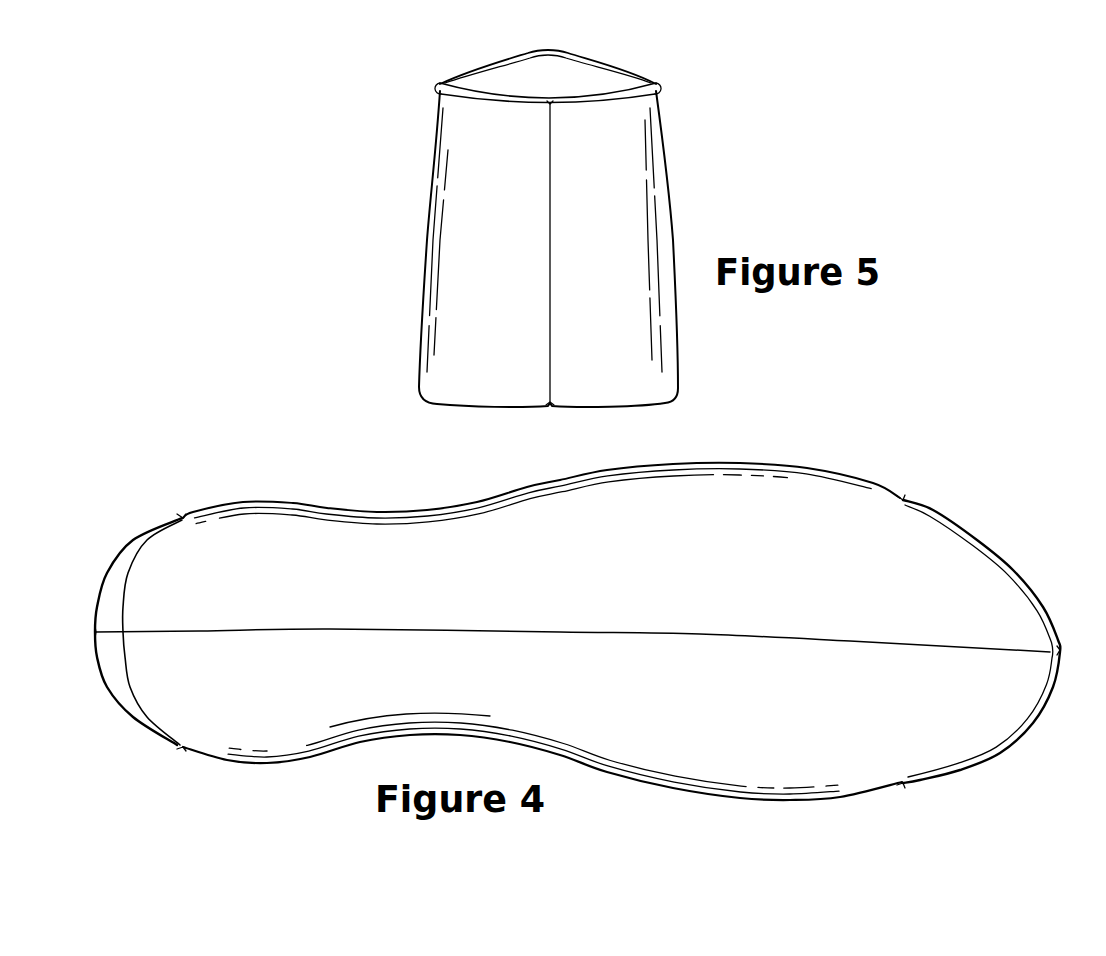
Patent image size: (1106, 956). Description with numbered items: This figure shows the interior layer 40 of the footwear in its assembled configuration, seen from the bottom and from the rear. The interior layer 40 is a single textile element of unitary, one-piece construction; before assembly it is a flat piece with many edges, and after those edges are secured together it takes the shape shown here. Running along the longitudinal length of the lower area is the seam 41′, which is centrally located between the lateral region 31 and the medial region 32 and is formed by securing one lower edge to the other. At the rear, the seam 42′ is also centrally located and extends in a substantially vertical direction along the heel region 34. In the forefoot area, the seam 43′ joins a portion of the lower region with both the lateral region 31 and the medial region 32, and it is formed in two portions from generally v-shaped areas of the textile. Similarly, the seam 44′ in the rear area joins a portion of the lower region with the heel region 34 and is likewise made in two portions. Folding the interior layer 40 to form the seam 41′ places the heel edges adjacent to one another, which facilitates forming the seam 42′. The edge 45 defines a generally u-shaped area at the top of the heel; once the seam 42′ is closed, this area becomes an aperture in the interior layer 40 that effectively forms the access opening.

In FIG. 5, the interior layer 40 is at (408, 113).
In FIG. 4, the interior layer 40 is at (964, 485).
In FIG. 5, the edge 45 is at (632, 66).
In FIG. 5, the lateral region 31 is at (668, 206).
In FIG. 4, the lateral region 31 is at (748, 463).
In FIG. 5, the medial region 32 is at (424, 270).
In FIG. 4, the medial region 32 is at (766, 803).
In FIG. 5, the heel region 34 is at (616, 244).
In FIG. 4, the heel region 34 is at (95, 577).
In FIG. 5, the seam 41′ is at (550, 408).
In FIG. 4, the seam 41′ is at (621, 628).
In FIG. 5, the seam 42′ is at (549, 287).
In FIG. 4, the seam 42′ is at (95, 632).
In FIG. 4, the seam 43′ is at (977, 550).
In FIG. 4, the seam 44′ is at (140, 572).